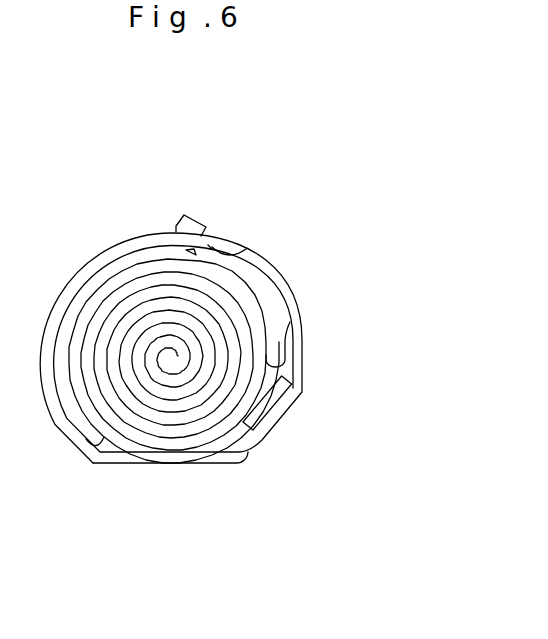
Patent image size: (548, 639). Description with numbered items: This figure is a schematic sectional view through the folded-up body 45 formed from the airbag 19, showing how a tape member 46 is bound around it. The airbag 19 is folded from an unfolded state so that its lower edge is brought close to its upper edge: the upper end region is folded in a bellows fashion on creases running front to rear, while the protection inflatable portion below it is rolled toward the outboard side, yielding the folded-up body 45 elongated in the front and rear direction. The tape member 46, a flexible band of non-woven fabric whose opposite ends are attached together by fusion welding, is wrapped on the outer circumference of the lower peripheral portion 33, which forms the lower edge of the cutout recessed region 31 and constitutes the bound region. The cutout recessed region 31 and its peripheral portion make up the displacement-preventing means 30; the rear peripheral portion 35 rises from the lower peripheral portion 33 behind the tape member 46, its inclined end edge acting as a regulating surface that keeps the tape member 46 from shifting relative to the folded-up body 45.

The airbag 19 is at (174, 361).
The displacement-preventing means 30 is at (210, 247).
The cutout recessed region 31 is at (206, 228).
The lower peripheral portion 33 is at (249, 252).
The rear peripheral portion 35 is at (193, 216).
The folded-up body 45 is at (117, 445).
The tape member 46 is at (287, 268).